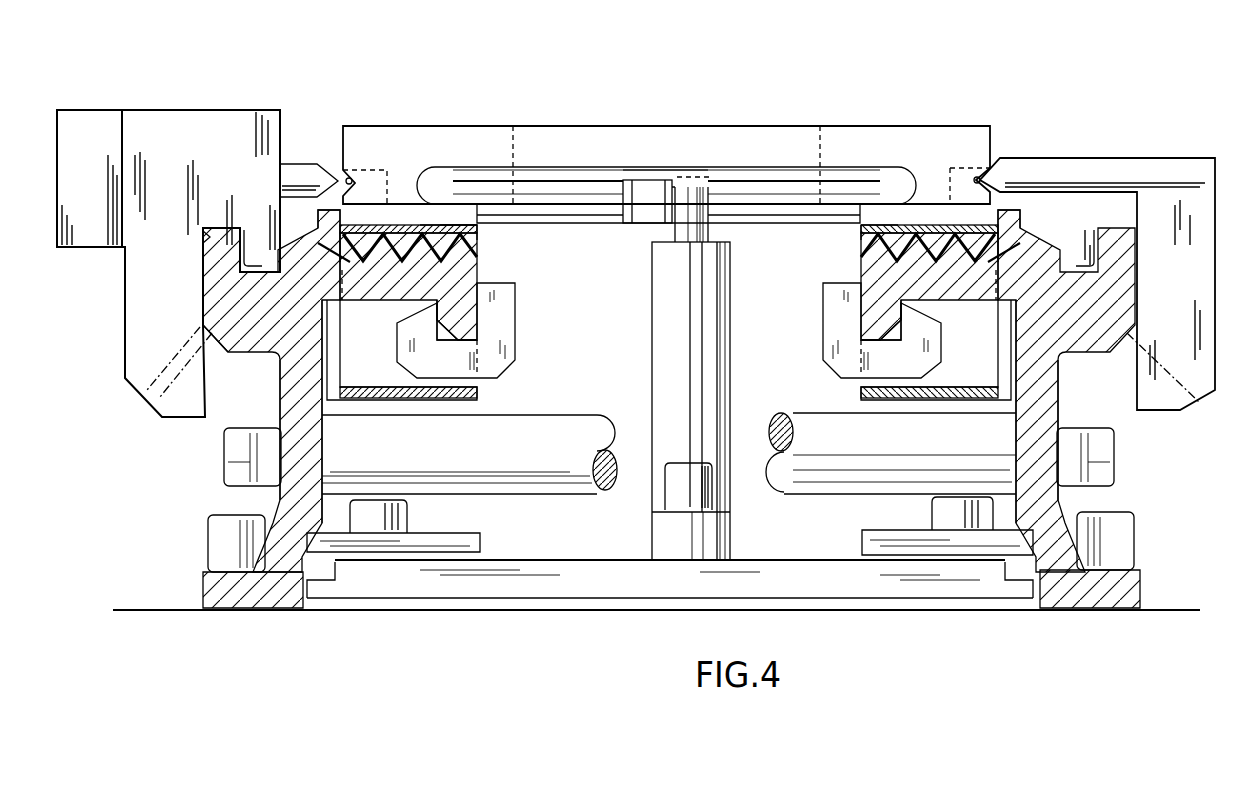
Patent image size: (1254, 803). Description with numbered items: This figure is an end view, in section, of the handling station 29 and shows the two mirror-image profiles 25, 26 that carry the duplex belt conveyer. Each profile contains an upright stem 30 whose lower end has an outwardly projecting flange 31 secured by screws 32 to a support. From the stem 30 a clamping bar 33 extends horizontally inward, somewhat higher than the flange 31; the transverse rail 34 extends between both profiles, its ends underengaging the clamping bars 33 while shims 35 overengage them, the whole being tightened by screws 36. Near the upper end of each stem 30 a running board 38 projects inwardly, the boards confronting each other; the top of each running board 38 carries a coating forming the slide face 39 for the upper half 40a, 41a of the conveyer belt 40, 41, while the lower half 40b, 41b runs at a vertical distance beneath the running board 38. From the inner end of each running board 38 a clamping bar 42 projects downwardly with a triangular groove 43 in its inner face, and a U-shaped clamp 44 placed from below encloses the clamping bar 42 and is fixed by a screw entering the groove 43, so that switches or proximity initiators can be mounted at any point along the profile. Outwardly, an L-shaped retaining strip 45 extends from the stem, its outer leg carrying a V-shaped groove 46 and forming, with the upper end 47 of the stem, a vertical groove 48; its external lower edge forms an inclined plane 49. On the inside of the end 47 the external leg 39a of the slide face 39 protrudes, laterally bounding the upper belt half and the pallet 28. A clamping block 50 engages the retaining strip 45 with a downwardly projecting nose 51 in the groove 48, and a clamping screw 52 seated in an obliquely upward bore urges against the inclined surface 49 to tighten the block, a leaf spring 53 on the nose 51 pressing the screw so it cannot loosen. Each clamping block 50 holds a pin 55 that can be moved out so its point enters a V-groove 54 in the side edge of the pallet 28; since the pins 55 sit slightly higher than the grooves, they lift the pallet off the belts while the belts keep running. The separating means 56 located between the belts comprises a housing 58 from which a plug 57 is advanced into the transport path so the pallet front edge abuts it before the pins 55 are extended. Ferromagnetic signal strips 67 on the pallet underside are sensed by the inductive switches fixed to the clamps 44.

The profile 25 is at (1068, 378).
The profile 26 is at (276, 396).
The pallet 28 is at (967, 115).
The handling station 29 is at (1085, 148).
The stem 30 is at (320, 408).
The flange 31 is at (210, 588).
The guide rod 32 is at (578, 415).
The clamping bar 33 is at (315, 570).
The transverse rail 34 is at (572, 590).
The shim 35 is at (440, 540).
The screw 36 is at (405, 511).
The running board 38 is at (458, 273).
The slide face 39 is at (478, 245).
The external leg of sliding surface 39a is at (430, 212).
The conveyer belt 40 is at (440, 198).
The upper half of conveyer belt 40a is at (458, 237).
The lower half of conveyer belt 40b is at (478, 392).
The conveyer belt 41 is at (917, 212).
The upper half of conveyer belt 41a is at (898, 222).
The lower half of conveyer belt 41b is at (862, 391).
The clamping bar 42 is at (468, 333).
The triangular groove 43 is at (474, 320).
The clamp 44 is at (515, 356).
The L-shaped retaining strip 45 is at (213, 292).
The V-shaped groove 46 is at (202, 238).
The upper end of stem 47 is at (301, 222).
The vertical groove 48 is at (265, 274).
The inclined plane 49 is at (228, 358).
The clamping block 50 is at (649, 240).
The nose 51 is at (270, 245).
The clamping screw 52 is at (200, 352).
The leaf spring 53 is at (256, 250).
The V-groove 54 is at (350, 177).
The pin 55 is at (322, 175).
The separating means 56 is at (735, 280).
The plug 57 is at (712, 200).
The housing 58 is at (720, 405).
The signal strip 67 is at (505, 216).